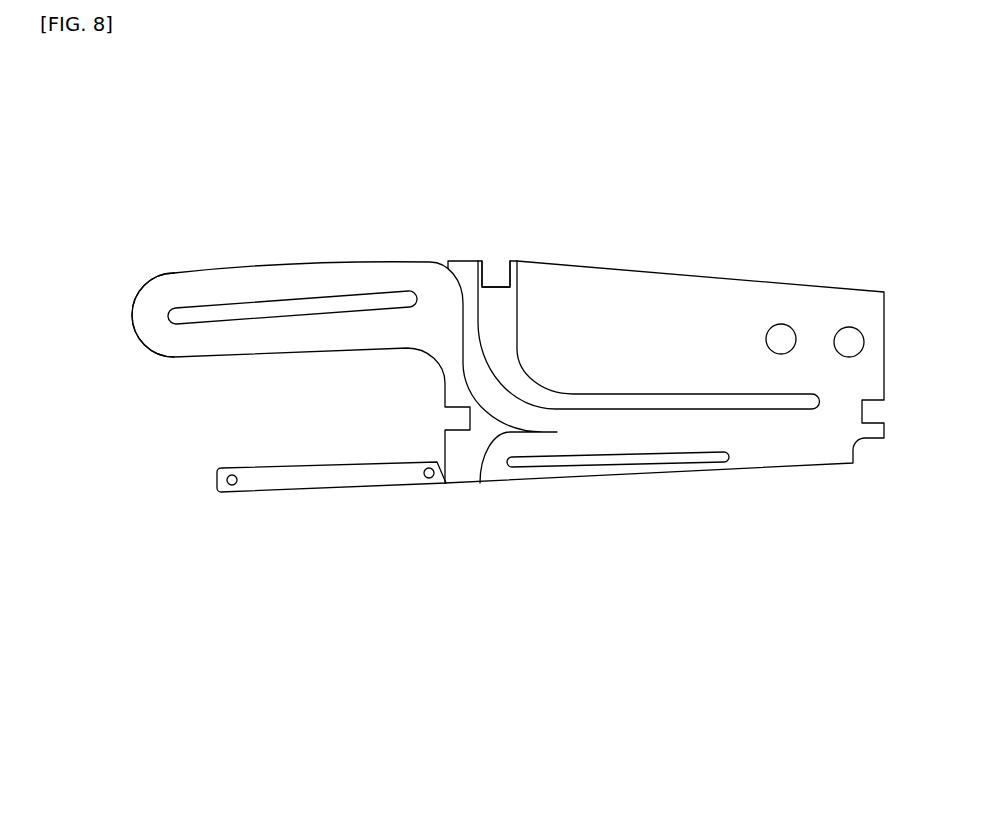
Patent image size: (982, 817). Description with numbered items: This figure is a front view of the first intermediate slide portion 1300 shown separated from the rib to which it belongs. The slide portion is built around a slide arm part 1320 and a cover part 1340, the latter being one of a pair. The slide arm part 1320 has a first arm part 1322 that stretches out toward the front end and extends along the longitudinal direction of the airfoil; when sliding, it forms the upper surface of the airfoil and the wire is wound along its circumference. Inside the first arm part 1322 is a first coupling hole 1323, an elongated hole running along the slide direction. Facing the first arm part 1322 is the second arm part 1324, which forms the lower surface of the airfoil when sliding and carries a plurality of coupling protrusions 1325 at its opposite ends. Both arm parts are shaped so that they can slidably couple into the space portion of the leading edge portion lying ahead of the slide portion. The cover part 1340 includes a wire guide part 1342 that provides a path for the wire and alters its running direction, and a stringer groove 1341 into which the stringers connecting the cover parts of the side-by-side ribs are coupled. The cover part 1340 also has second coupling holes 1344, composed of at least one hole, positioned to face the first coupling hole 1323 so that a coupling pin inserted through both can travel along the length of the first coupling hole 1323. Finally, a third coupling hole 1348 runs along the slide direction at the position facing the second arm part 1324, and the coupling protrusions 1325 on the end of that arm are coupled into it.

The first intermediate slide portion 1300 is at (200, 92).
The slide arm part 1320 is at (305, 398).
The first arm part 1322 is at (157, 338).
The first coupling hole 1323 is at (347, 300).
The second arm part 1324 is at (340, 477).
The coupling protrusions 1325 is at (429, 478).
The cover part 1340 is at (664, 344).
The stringer groove 1341 is at (497, 285).
The wire guide part 1342 is at (620, 405).
The second coupling holes 1344 is at (781, 335).
The third coupling hole 1348 is at (638, 458).